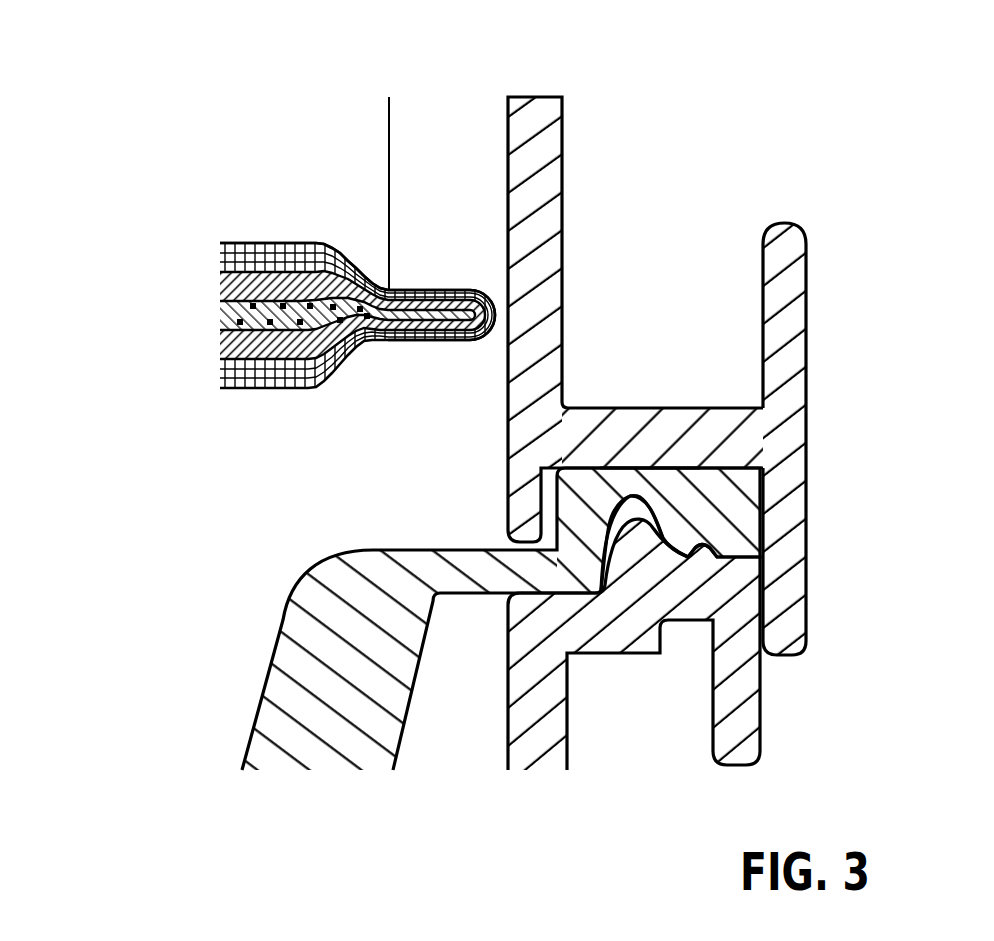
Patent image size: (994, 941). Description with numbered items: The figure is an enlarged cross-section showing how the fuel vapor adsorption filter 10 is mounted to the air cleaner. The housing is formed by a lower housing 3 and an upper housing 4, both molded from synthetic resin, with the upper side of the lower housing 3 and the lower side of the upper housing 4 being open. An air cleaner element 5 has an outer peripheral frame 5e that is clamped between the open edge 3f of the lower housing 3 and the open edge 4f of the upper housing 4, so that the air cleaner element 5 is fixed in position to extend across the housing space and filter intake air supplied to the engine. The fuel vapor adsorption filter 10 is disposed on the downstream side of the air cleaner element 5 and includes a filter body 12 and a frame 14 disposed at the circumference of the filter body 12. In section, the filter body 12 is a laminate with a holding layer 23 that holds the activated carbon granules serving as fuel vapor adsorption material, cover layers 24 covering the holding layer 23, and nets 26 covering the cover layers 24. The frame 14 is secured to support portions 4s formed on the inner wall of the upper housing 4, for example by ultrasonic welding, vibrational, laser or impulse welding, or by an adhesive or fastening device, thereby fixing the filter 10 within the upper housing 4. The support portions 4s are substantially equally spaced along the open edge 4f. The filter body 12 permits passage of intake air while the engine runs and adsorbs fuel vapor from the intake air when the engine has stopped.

The lower housing 3 is at (587, 723).
The open edge of the lower housing 3f is at (691, 557).
The upper housing 4 is at (563, 152).
The open edge of the upper housing 4f is at (642, 476).
The support portion 4s is at (470, 263).
The air cleaner element 5 is at (295, 578).
The outer peripheral frame 5e is at (768, 474).
The fuel vapor adsorption filter 10 is at (206, 199).
The filter body 12 is at (294, 236).
The frame 14 is at (432, 355).
The holding layer 23 is at (228, 317).
The cover layer 24 is at (226, 297).
The net 26 is at (222, 258).